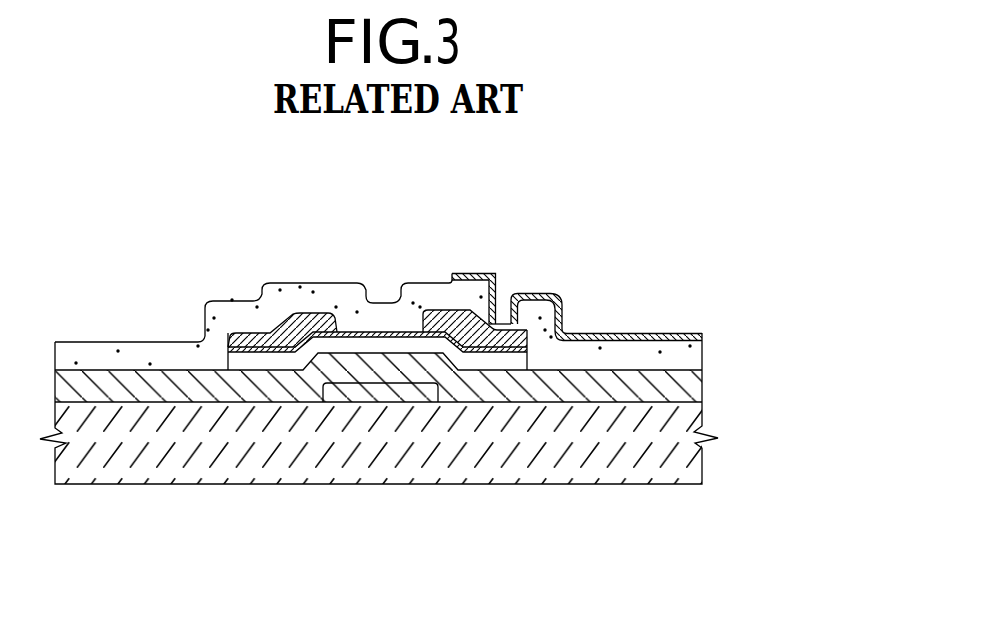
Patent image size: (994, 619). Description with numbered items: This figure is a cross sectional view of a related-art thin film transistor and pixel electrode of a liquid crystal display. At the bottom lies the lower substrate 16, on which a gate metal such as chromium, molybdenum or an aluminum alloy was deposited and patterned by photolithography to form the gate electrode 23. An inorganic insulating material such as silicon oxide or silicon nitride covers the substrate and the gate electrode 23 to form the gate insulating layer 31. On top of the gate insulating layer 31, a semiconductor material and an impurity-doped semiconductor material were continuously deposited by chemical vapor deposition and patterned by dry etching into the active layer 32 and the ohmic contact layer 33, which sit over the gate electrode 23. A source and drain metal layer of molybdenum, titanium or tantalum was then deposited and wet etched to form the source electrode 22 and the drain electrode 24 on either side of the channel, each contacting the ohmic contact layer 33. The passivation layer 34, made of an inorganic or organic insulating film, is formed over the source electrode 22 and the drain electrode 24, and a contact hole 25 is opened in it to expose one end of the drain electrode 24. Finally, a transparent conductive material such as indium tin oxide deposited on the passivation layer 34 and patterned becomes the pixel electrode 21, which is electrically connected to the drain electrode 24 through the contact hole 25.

The lower substrate 16 is at (638, 468).
The gate electrode 23 is at (389, 393).
The active layer 32 is at (409, 313).
The ohmic contact layer 33 is at (334, 330).
The source electrode 22 is at (288, 314).
The drain electrode 24 is at (449, 310).
The contact hole 25 is at (508, 300).
The pixel electrode 21 is at (642, 338).
The gate insulating layer 31 is at (108, 387).
The passivation layer 34 is at (206, 322).